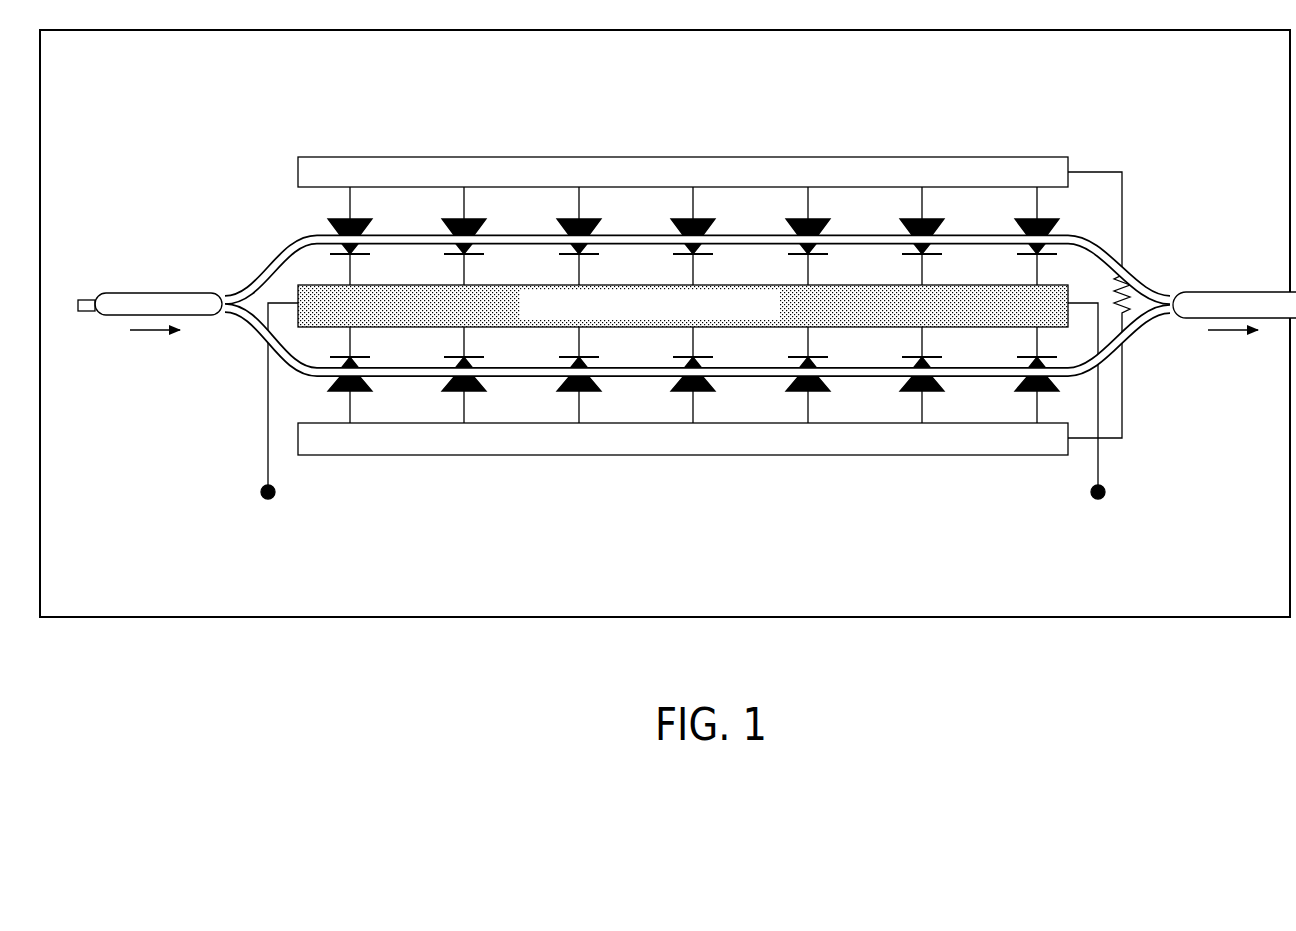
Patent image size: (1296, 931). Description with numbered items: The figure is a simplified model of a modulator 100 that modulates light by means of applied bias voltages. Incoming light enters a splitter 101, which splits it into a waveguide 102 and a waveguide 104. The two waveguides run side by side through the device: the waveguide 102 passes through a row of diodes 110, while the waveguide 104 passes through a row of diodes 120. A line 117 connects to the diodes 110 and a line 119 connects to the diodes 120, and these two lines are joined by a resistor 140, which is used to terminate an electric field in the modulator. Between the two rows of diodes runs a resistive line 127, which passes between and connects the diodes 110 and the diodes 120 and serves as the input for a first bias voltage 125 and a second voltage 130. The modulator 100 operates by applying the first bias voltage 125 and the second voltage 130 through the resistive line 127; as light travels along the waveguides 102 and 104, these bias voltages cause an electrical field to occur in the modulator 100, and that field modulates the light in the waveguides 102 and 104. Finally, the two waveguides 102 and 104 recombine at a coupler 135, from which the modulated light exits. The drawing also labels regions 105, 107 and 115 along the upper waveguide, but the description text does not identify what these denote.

The modulator 100 is at (292, 598).
The splitter 101 is at (145, 292).
The waveguide 102 is at (259, 273).
The waveguide 104 is at (241, 327).
The first modulator segment 105 is at (315, 211).
The second modulator segment 107 is at (439, 209).
The diodes 110 is at (366, 209).
The last modulator segment 115 is at (1061, 207).
The line 117 is at (956, 156).
The line 119 is at (958, 456).
The diodes 120 is at (1013, 401).
The bias voltage V1 125 is at (260, 491).
The resistive line 127 is at (773, 317).
The voltage V2 130 is at (1090, 491).
The coupler 135 is at (1229, 291).
The resistor 140 is at (1130, 312).